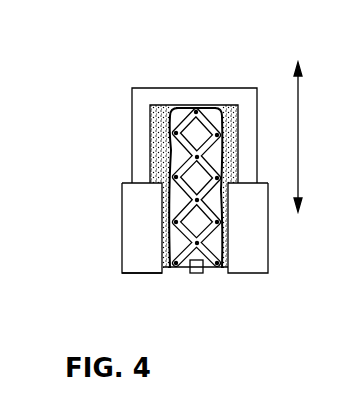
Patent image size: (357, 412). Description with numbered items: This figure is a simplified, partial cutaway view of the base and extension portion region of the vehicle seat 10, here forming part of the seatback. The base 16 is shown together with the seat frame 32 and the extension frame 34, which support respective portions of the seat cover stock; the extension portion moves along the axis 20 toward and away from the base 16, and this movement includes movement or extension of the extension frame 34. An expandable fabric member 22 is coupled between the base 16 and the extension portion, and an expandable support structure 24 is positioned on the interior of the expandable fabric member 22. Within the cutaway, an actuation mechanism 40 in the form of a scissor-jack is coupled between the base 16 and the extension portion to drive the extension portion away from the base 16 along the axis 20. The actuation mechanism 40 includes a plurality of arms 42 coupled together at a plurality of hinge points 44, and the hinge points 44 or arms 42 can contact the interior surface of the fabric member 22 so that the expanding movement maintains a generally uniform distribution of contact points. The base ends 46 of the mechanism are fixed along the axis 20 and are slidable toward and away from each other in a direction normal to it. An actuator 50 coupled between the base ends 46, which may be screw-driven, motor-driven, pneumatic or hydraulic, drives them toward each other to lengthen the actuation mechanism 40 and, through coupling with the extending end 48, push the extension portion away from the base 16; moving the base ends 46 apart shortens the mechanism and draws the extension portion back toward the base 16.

The vehicle seat 10 is at (192, 177).
The base 16 is at (100, 257).
The axis 20 is at (298, 138).
The expandable fabric member 22 is at (228, 106).
The expandable support structure 24 is at (155, 274).
The seat frame 32 is at (248, 235).
The extension frame 34 is at (152, 95).
The actuation mechanism 40 is at (213, 160).
The arms 42 is at (162, 205).
The hinge points 44 is at (170, 150).
The base ends 46 is at (175, 263).
The extending end 48 is at (190, 106).
The actuator 50 is at (196, 274).